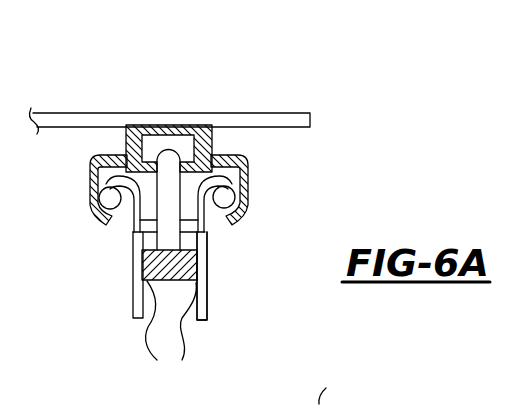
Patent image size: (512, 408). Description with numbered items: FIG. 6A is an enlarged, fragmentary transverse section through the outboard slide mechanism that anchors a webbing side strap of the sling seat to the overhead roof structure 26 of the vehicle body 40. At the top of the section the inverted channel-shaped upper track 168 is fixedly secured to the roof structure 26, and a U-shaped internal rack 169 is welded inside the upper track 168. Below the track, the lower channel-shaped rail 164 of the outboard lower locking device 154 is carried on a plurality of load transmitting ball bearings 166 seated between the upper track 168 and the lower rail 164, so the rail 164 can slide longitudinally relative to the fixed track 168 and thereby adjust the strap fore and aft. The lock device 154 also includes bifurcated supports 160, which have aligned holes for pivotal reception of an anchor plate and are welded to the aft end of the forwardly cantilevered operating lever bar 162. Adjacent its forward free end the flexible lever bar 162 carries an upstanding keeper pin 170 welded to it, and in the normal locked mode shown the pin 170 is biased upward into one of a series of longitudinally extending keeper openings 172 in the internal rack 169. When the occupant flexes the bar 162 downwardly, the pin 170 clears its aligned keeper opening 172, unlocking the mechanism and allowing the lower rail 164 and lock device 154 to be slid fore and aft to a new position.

The overhead roof structure 26 is at (200, 117).
The vehicle body 40 is at (337, 384).
The outboard lower locking device 154 is at (213, 303).
The bifurcated supports 160 is at (171, 335).
The operating lever bar 162 is at (195, 263).
The lower channel-shaped rail 164 is at (130, 226).
The load transmitting ball bearings 166 is at (105, 198).
The inverted channel-shaped upper track 168 is at (250, 184).
The U-shaped internal rack 169 is at (92, 166).
The keeper pin 170 is at (163, 153).
The keeper openings 172 is at (172, 181).